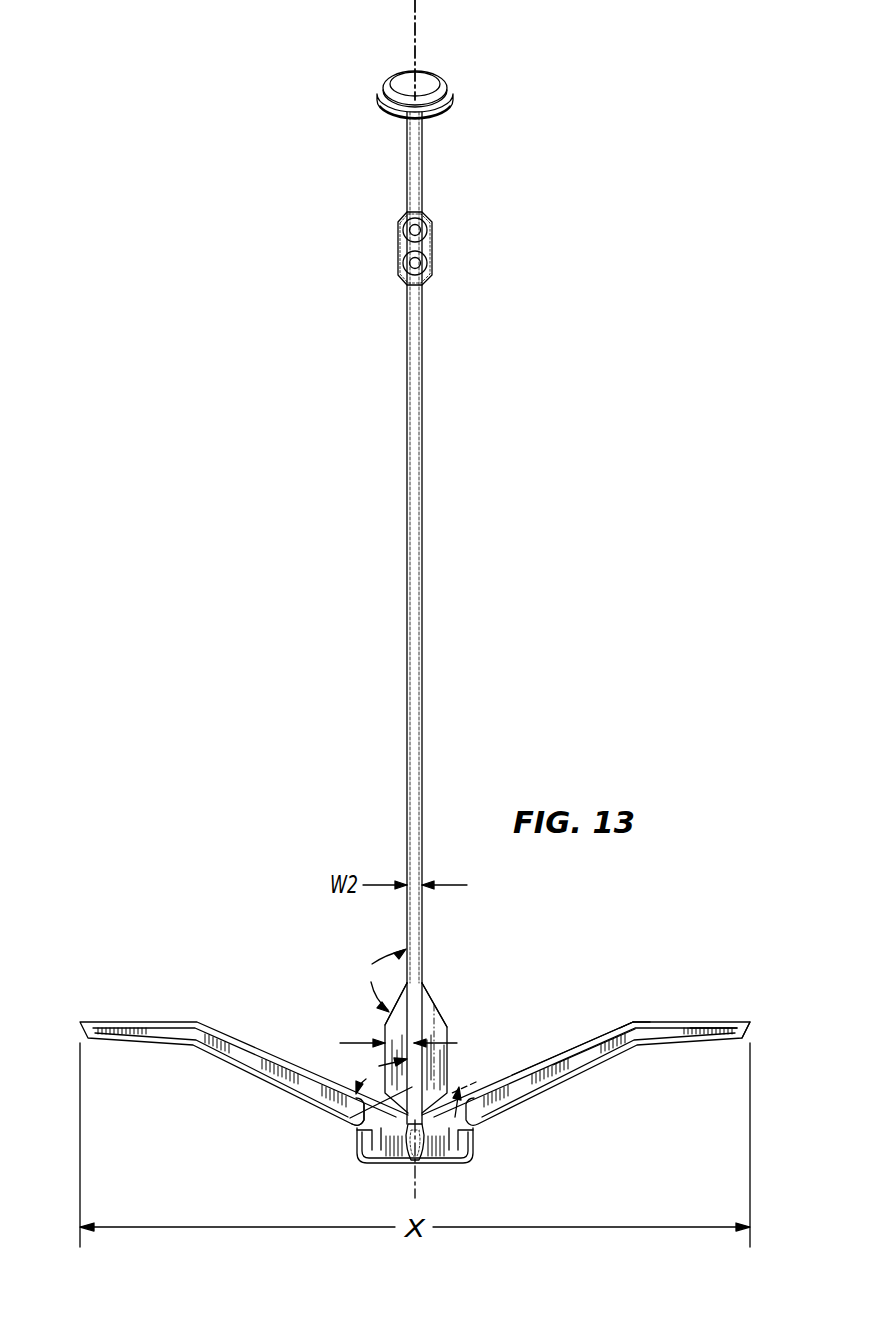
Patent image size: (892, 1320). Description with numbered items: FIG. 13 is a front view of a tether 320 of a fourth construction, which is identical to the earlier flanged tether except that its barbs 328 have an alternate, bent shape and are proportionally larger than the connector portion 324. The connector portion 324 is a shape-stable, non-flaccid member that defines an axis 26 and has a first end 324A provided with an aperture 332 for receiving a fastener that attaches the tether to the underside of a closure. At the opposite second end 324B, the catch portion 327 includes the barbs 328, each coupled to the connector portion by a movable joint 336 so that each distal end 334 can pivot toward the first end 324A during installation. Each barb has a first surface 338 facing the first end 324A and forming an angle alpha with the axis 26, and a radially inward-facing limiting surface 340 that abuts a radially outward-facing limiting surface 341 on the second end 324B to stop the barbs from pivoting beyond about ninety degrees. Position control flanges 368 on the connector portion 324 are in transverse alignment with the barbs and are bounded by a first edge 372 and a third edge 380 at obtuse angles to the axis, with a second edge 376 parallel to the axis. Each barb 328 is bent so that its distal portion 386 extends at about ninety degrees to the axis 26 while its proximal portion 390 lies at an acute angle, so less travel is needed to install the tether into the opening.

The axis 26 is at (413, 42).
The tether 320 is at (580, 540).
The connector portion 324 is at (415, 692).
The first end of the connector portion 324A is at (439, 169).
The second end of the connector portion 324B is at (443, 1056).
The aperture 332 is at (402, 88).
The catch portion 327 is at (300, 1002).
The barbs 328 is at (532, 1088).
The distal end 334 is at (752, 1023).
The movable joint 336 is at (511, 1073).
The first surface 338 is at (633, 1020).
The limiting surface 340 is at (357, 1153).
The limiting surface 341 is at (430, 1140).
The flanges 368 is at (430, 1020).
The first edge 372 is at (430, 998).
The second edge 376 is at (445, 1033).
The third edge 380 is at (350, 1126).
The distal portion 386 is at (703, 1022).
The proximal portion 390 is at (553, 1055).